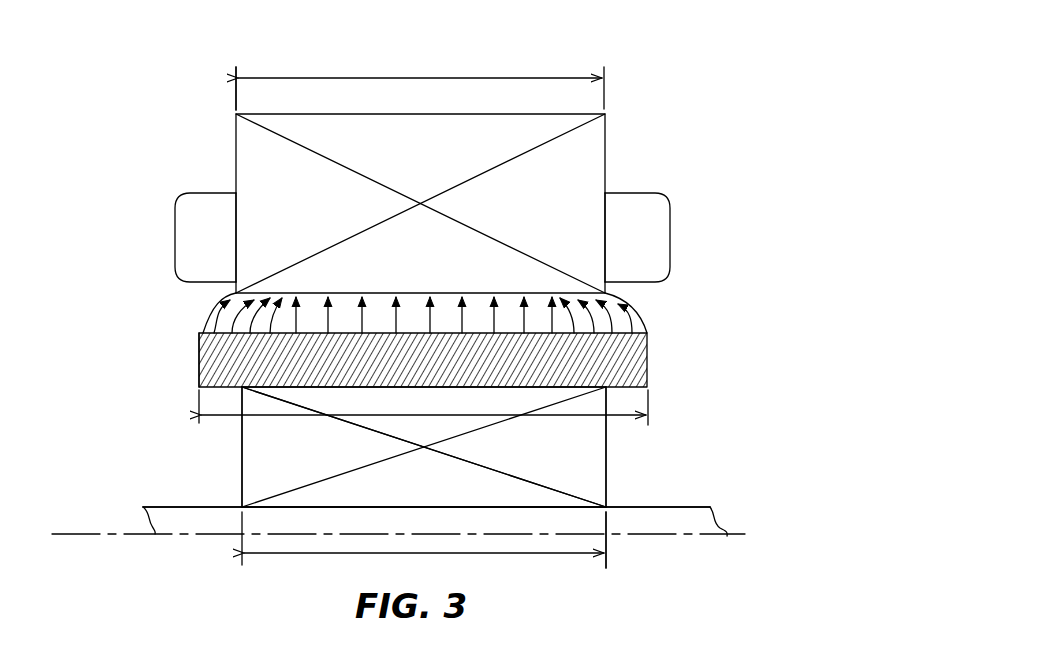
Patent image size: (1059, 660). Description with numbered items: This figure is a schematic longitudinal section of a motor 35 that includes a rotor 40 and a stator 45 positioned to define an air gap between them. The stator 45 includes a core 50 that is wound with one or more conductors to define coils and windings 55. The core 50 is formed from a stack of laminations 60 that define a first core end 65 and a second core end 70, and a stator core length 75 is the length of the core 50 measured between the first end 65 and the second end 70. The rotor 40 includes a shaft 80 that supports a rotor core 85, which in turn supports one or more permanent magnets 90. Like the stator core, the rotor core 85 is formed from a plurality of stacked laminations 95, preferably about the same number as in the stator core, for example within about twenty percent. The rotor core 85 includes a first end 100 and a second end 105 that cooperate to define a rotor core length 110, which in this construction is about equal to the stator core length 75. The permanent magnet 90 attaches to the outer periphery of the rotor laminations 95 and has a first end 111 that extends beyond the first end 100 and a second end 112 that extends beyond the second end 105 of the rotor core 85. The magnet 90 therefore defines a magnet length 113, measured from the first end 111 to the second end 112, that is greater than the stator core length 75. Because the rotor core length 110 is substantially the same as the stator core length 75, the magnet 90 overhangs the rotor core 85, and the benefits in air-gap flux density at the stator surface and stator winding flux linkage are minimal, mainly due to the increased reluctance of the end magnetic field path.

The motor 35 is at (634, 66).
The rotor 40 is at (738, 412).
The stator 45 is at (718, 220).
The core 50 is at (585, 156).
The coils and windings 55 is at (190, 206).
The laminations 60 is at (258, 220).
The first core end 65 is at (232, 140).
The second core end 70 is at (607, 178).
The stator core length 75 is at (383, 78).
The shaft 80 is at (712, 509).
The rotor core 85 is at (250, 448).
The permanent magnet 90 is at (648, 368).
The laminations 95 is at (548, 446).
The first end 100 is at (250, 483).
The second end 105 is at (610, 477).
The rotor core length 110 is at (525, 555).
The first end 111 is at (199, 355).
The second end 112 is at (648, 342).
The magnet length 113 is at (300, 417).